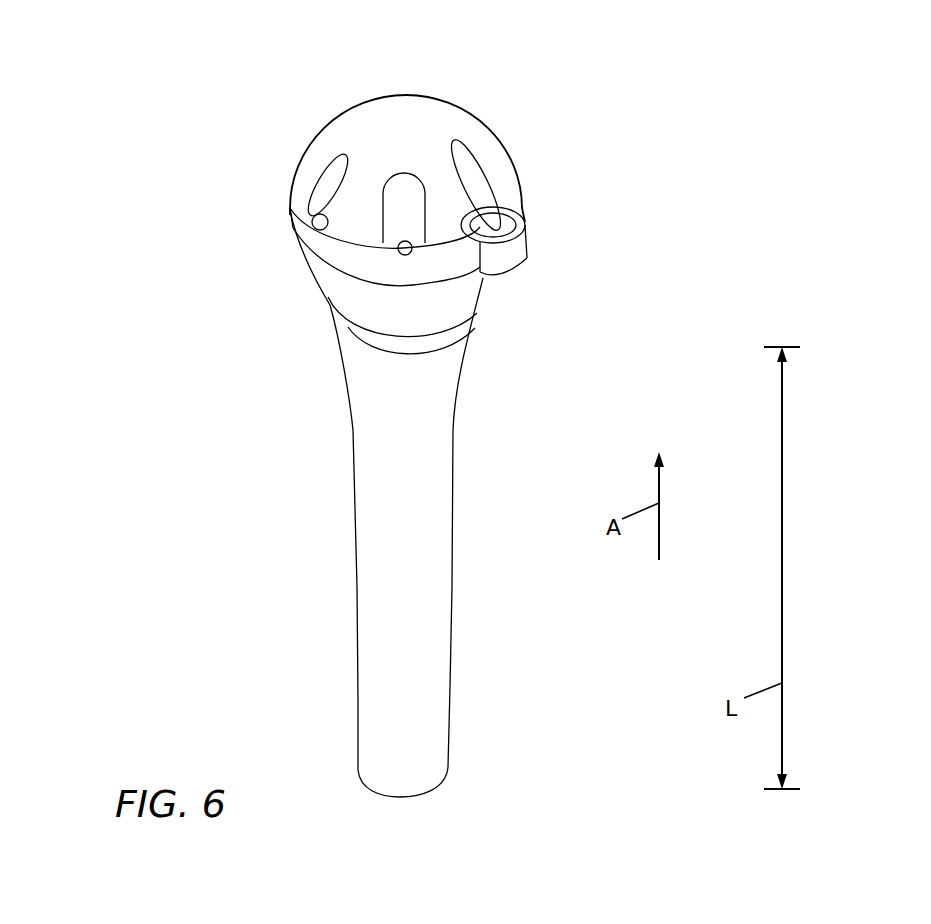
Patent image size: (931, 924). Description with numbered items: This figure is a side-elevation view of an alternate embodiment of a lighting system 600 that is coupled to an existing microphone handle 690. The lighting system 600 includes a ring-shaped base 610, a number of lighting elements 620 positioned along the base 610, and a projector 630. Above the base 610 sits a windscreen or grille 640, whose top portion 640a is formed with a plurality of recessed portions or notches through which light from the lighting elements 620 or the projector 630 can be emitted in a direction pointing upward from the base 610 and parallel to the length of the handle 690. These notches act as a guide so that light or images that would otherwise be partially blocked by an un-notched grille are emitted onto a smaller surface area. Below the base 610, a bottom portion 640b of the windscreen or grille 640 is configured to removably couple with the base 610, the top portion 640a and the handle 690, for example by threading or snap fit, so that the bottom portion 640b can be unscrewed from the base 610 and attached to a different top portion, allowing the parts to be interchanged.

The lighting system 600 is at (150, 100).
The ring-shaped base 610 is at (345, 255).
The lighting elements 620 is at (312, 223).
The projector 630 is at (495, 230).
The windscreen or grille 640 is at (531, 120).
The top portion of windscreen or grille 640a is at (407, 137).
The bottom portion of windscreen or grille 640b is at (487, 292).
The microphone handle 690 is at (341, 572).